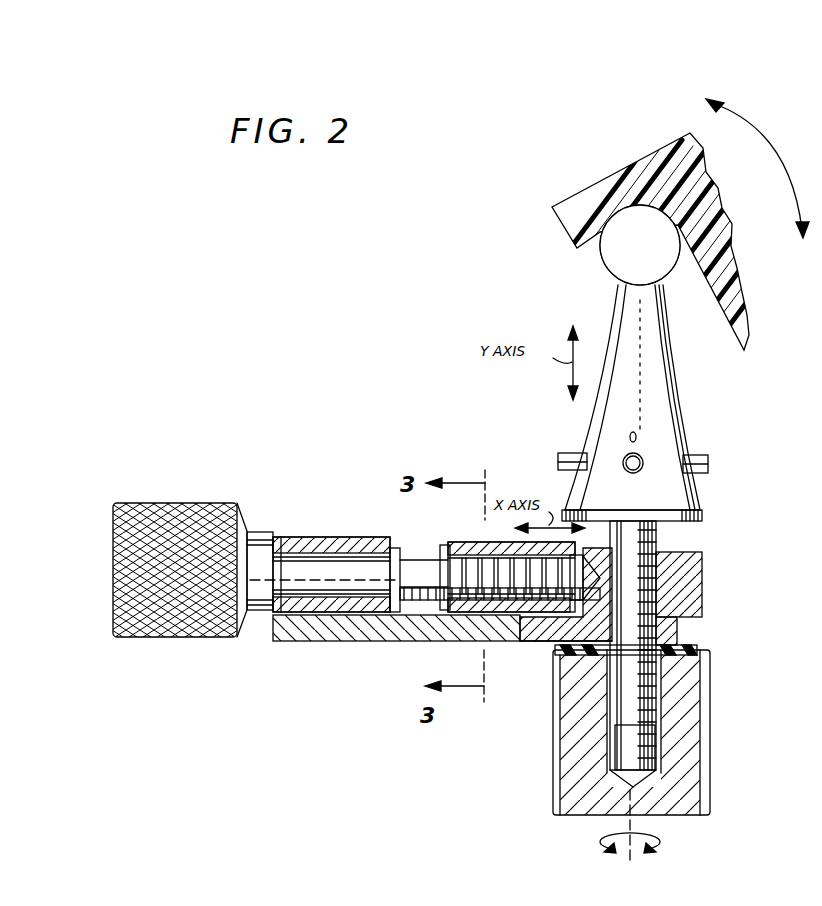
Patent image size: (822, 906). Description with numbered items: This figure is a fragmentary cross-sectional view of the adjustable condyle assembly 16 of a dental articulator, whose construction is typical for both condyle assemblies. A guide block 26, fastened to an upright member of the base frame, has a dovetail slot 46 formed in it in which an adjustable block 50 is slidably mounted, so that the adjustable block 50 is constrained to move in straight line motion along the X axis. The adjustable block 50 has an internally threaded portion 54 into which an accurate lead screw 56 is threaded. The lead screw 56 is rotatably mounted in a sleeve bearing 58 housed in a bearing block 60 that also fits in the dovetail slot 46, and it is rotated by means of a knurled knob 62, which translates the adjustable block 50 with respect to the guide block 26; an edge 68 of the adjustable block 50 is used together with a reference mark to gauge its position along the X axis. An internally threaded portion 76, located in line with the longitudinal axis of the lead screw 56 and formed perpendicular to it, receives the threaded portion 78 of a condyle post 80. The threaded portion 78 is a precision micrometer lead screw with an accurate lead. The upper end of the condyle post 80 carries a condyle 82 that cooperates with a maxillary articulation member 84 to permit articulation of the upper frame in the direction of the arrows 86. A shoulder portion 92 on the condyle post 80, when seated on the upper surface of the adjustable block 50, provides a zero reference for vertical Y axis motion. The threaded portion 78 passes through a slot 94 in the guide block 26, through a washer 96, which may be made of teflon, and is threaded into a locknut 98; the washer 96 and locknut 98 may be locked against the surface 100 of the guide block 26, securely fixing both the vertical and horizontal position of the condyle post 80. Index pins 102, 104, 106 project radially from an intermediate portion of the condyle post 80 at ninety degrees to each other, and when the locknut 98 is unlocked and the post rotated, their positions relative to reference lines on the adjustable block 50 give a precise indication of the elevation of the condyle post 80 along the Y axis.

The adjustable condyle assembly 16 is at (300, 652).
The guide block 26 is at (347, 641).
The dovetail slot 46 is at (425, 610).
The adjustable block 50 is at (460, 537).
The internally threaded portion 54 is at (548, 641).
The lead screw 56 is at (412, 592).
The sleeve bearing 58 is at (313, 550).
The bearing block 60 is at (283, 534).
The knurled knob 62 is at (188, 503).
The edge 68 is at (448, 538).
The internally threaded portion 76 is at (700, 598).
The threaded portion 78 is at (657, 540).
The condyle post 80 is at (663, 370).
The condyle 82 is at (610, 267).
The maxillary articulation member 84 is at (578, 243).
The arrows 86 is at (775, 160).
The shoulder portion 92 is at (700, 516).
The slot 94 is at (680, 633).
The washer 96 is at (707, 650).
The locknut 98 is at (712, 706).
The surface 100 is at (556, 645).
The index pin 102 is at (560, 456).
The index pin 104 is at (642, 456).
The index pin 106 is at (705, 473).